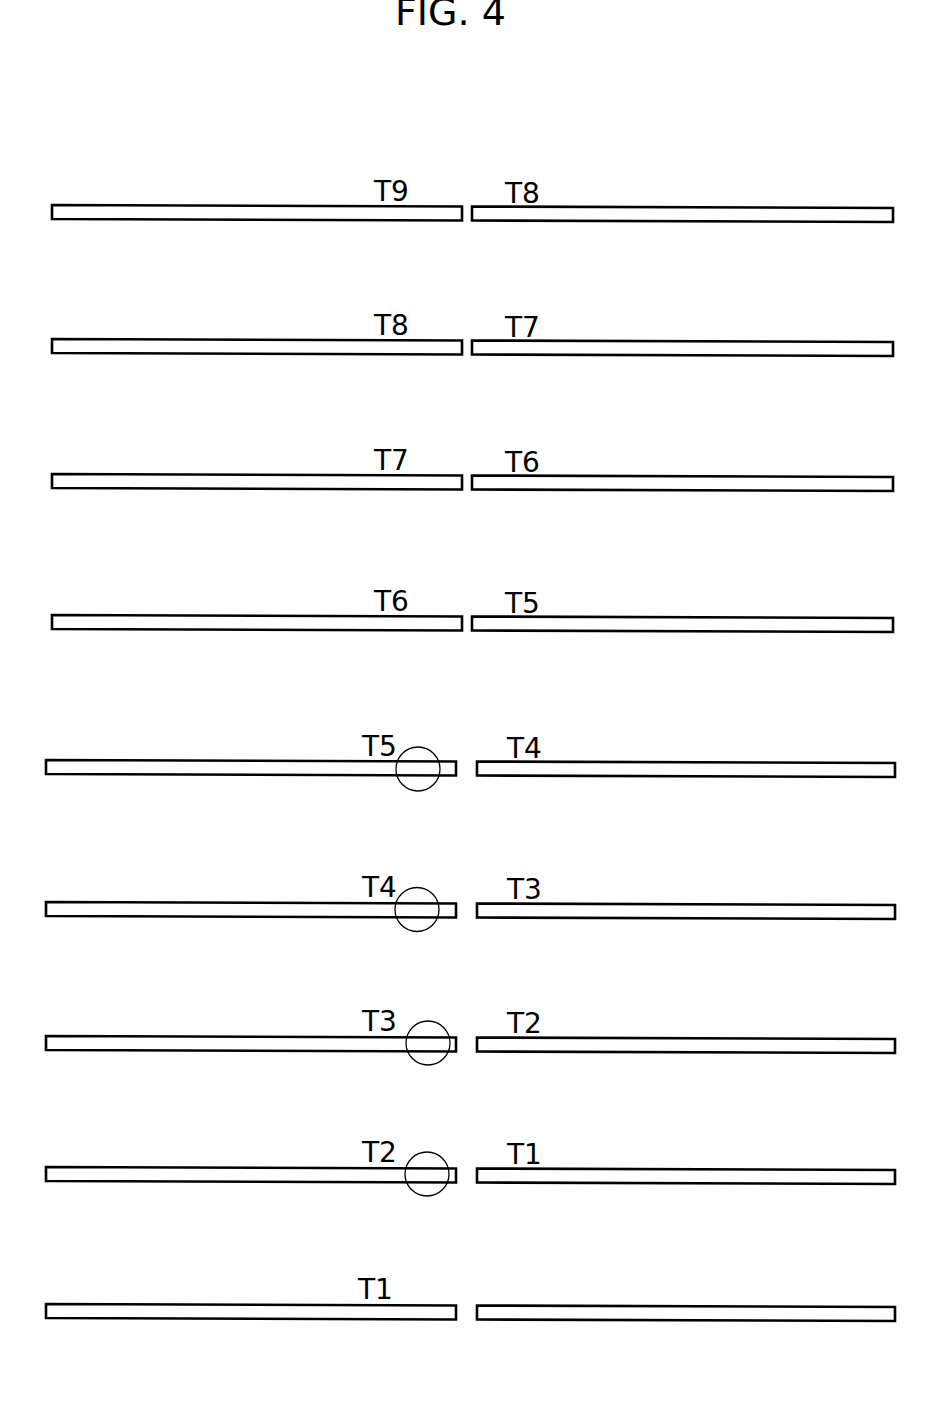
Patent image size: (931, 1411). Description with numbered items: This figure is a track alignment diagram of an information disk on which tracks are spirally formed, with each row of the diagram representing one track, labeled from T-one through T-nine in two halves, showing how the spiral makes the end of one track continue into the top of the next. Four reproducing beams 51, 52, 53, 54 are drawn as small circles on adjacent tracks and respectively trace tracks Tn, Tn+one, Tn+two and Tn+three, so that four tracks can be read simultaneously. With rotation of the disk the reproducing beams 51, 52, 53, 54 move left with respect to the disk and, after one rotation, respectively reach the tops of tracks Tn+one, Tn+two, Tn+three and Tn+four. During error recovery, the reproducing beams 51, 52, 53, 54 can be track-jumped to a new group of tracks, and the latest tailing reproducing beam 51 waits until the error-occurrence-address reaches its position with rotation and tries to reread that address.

The reproducing beam 51 is at (443, 1189).
The reproducing beam 52 is at (444, 1058).
The reproducing beam 53 is at (433, 925).
The reproducing beam 54 is at (434, 785).